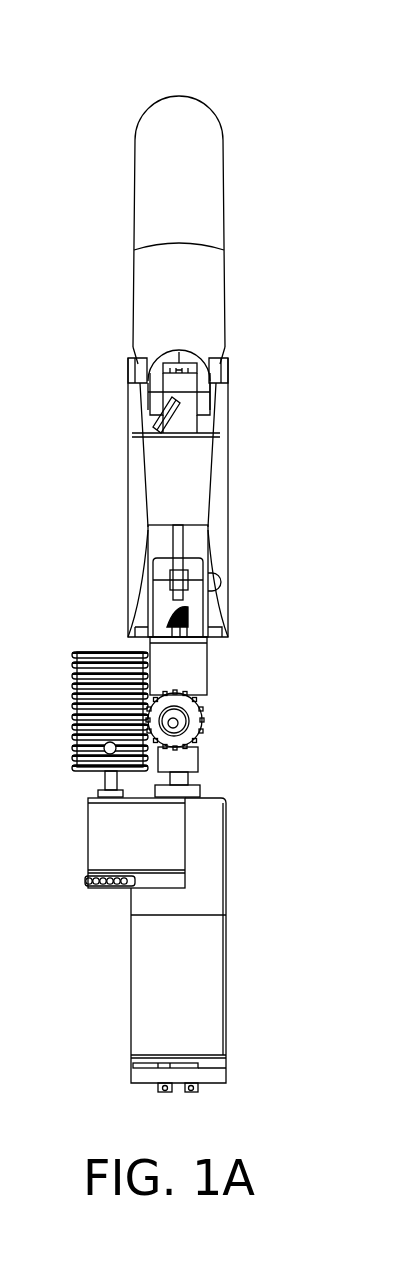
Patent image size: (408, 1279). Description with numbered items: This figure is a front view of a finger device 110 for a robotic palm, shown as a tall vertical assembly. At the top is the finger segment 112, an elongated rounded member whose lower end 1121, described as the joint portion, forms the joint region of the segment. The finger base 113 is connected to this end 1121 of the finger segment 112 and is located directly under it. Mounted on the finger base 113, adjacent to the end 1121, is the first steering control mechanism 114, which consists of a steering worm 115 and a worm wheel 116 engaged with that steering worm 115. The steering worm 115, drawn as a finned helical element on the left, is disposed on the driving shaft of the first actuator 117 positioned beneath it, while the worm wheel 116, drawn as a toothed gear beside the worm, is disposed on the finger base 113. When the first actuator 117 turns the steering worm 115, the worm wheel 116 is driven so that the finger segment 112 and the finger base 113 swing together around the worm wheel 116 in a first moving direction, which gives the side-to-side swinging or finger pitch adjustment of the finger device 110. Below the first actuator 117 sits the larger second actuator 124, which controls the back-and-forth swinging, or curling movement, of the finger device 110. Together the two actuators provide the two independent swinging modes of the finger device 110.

The finger device 110 is at (70, 48).
The finger segment 112 is at (228, 488).
The end of the finger segment 1121 is at (246, 614).
The finger base 113 is at (193, 663).
The first steering control mechanism 114 is at (212, 724).
The steering worm 115 is at (133, 670).
The worm wheel 116 is at (192, 723).
The first actuator 117 is at (167, 840).
The second actuator 124 is at (197, 988).